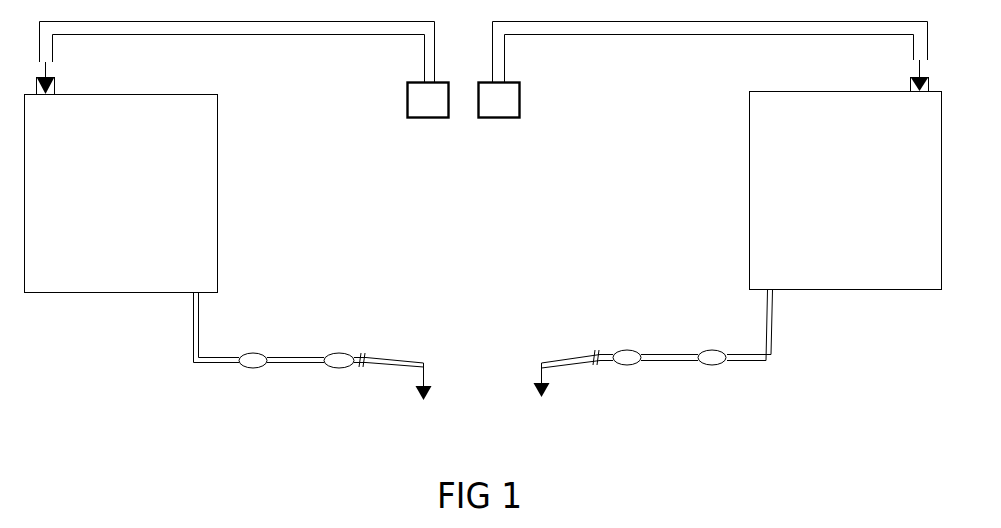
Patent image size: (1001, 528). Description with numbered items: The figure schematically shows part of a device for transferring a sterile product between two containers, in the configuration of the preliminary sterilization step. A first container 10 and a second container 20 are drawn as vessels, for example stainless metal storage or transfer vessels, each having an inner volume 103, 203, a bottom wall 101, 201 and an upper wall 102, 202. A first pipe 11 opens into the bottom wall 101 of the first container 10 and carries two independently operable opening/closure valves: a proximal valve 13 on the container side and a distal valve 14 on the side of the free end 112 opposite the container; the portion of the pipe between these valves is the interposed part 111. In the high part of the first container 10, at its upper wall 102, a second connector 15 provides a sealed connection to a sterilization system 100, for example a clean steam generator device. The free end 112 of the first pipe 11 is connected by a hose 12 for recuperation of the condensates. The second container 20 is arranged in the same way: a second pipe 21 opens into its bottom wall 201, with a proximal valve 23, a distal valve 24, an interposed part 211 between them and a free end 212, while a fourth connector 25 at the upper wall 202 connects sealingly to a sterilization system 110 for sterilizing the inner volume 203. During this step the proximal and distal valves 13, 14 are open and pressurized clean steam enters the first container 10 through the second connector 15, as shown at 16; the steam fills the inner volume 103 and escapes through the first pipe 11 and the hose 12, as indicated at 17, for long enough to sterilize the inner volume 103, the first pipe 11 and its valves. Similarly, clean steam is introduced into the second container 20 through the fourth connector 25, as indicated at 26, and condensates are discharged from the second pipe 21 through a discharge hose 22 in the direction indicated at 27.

The first container 10 is at (218, 135).
The bottom wall 101 is at (78, 292).
The upper wall 102 is at (160, 94).
The inner volume 103 is at (145, 190).
The first pipe 11 is at (192, 341).
The interposed part 111 is at (292, 363).
The free end 112 is at (357, 367).
The hose 12 is at (386, 358).
The proximal valve 13 is at (253, 353).
The distal valve 14 is at (338, 353).
The second connector 15 is at (55, 89).
The introduction of clean steam 16 is at (46, 72).
The discharge of condensates 17 is at (430, 378).
The second container 20 is at (749, 169).
The bottom wall 201 is at (847, 289).
The upper wall 202 is at (792, 91).
The inner volume 203 is at (875, 188).
The second pipe 21 is at (772, 343).
The interposed part 211 is at (669, 361).
The free end 212 is at (599, 366).
The discharge hose 22 is at (558, 356).
The proximal valve 23 is at (710, 350).
The distal valve 24 is at (624, 350).
The fourth connector 25 is at (910, 84).
The introduction of clean steam 26 is at (918, 72).
The discharge direction 27 is at (541, 376).
The sterilization system 100 is at (429, 118).
The sterilization system 110 is at (487, 118).